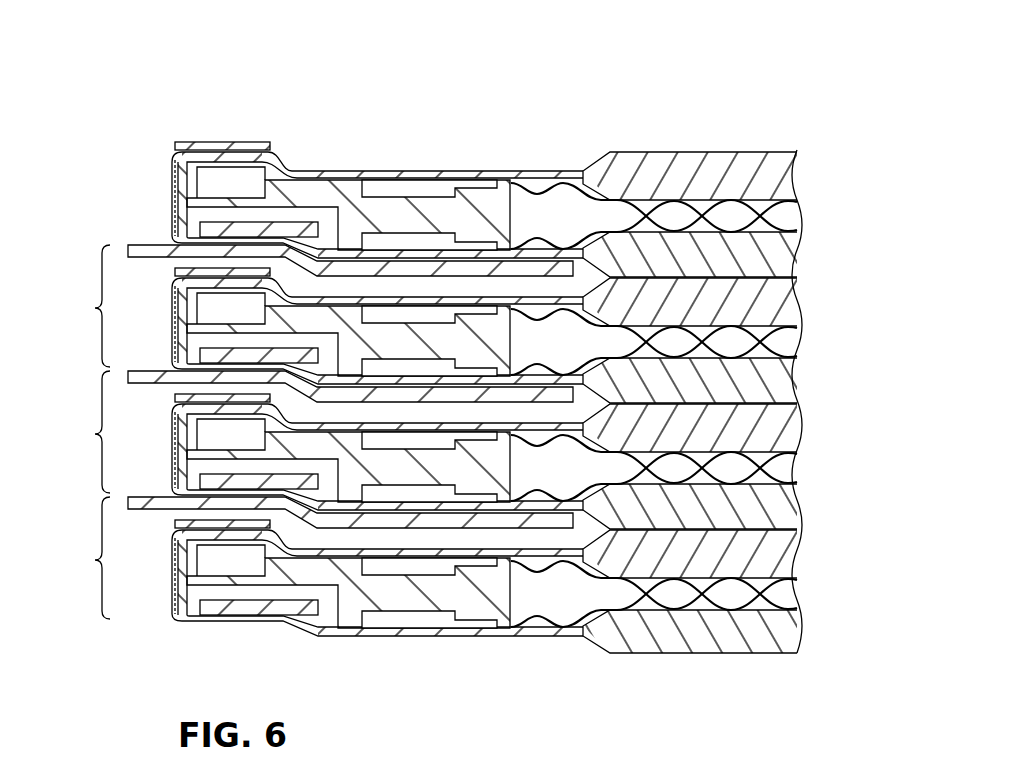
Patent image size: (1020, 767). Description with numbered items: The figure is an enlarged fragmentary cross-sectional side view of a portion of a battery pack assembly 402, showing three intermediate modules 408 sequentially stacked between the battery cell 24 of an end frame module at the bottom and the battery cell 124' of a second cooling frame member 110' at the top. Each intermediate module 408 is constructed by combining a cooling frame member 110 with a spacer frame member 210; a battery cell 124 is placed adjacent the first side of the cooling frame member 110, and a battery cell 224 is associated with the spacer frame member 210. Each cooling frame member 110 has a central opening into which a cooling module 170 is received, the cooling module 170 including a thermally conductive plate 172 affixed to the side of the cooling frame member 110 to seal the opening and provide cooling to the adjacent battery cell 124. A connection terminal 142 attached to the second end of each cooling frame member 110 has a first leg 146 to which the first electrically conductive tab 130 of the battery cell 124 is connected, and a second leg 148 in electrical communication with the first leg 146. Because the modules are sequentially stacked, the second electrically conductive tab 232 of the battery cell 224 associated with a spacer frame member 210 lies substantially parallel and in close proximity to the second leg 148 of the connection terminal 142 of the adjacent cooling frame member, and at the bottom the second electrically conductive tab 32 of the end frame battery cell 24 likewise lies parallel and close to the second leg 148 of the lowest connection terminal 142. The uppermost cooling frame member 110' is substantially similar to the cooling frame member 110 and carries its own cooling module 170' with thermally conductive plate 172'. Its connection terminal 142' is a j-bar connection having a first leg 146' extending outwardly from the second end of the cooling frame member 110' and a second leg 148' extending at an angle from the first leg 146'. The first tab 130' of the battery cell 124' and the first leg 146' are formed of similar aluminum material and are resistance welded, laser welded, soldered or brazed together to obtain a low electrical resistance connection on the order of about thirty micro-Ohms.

The battery pack assembly 402 is at (197, 74).
The first leg of connection terminal 146' is at (222, 129).
The first leg of connection terminal 146 is at (194, 402).
The connection terminal 142' is at (350, 186).
The connection terminal 142 is at (350, 446).
The second leg of connection terminal 148' is at (146, 198).
The second leg of connection terminal 148 is at (146, 450).
The second electrically conductive tab 232 is at (178, 240).
The second electrically conductive tab 32 is at (180, 619).
The first tab 130' is at (255, 172).
The first electrically conductive tab 130 is at (257, 423).
The cooling frame member 110' is at (348, 208).
The cooling frame member 110 is at (348, 460).
The spacer frame member 210 is at (128, 255).
The battery cell 124' is at (690, 176).
The battery cell 124 is at (690, 428).
The battery cell 224 is at (712, 263).
The battery cell 24 is at (710, 643).
The thermally conductive plate 172' is at (688, 207).
The thermally conductive plate 172 is at (685, 459).
The cooling module 170' is at (688, 225).
The cooling module 170 is at (685, 477).
The intermediate module 408 is at (85, 432).